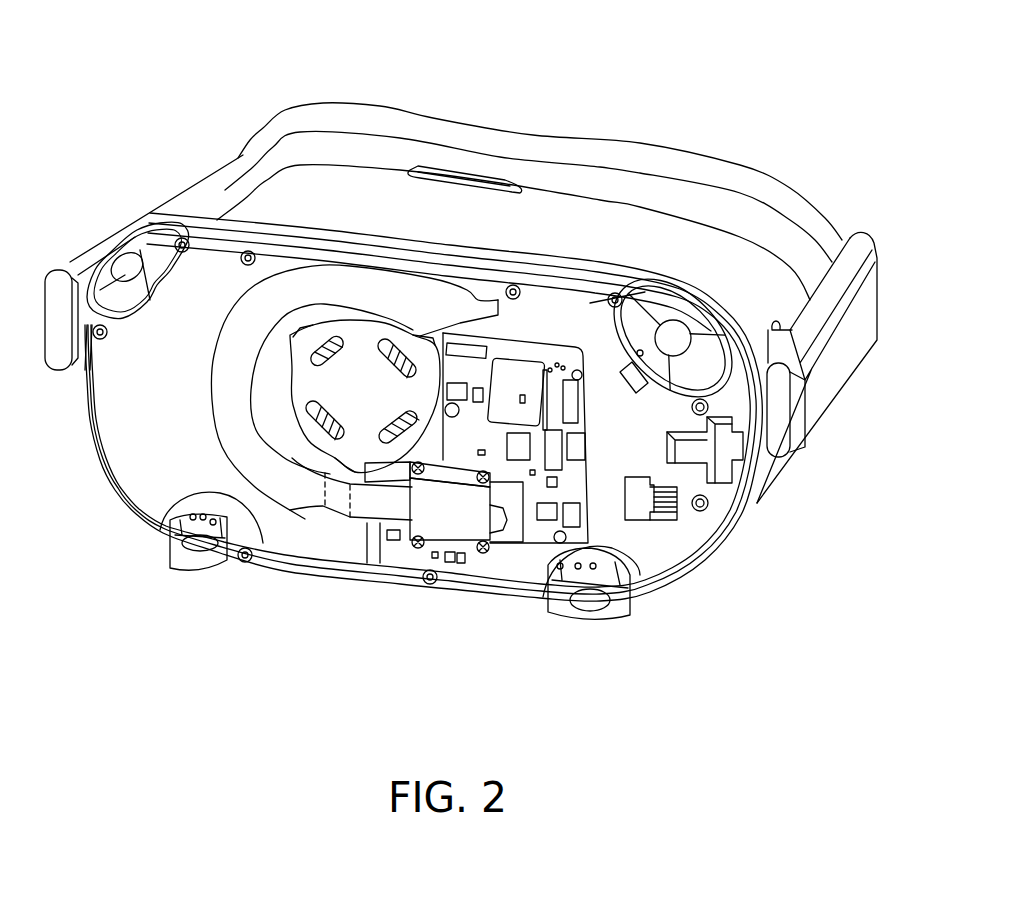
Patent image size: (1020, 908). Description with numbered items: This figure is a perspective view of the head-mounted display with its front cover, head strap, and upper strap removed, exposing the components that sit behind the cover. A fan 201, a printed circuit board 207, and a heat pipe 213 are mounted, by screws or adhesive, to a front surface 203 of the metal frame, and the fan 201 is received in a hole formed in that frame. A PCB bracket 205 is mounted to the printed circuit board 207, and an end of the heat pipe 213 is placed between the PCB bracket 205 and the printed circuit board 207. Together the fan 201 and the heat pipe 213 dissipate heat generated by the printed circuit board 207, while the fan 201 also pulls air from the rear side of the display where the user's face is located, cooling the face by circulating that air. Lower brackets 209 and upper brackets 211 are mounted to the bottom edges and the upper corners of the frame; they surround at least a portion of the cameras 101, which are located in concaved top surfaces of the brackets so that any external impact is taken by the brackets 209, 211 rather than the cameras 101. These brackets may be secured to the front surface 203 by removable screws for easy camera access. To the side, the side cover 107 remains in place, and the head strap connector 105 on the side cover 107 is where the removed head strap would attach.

The cameras 101 is at (197, 550).
The head strap connector 105 is at (850, 353).
The side cover 107 is at (768, 467).
The fan 201 is at (317, 433).
The front surface 203 is at (184, 404).
The PCB bracket 205 is at (417, 518).
The printed circuit board 207 is at (507, 567).
The lower brackets 209 is at (610, 603).
The upper brackets 211 is at (113, 252).
The heat pipe 213 is at (320, 290).